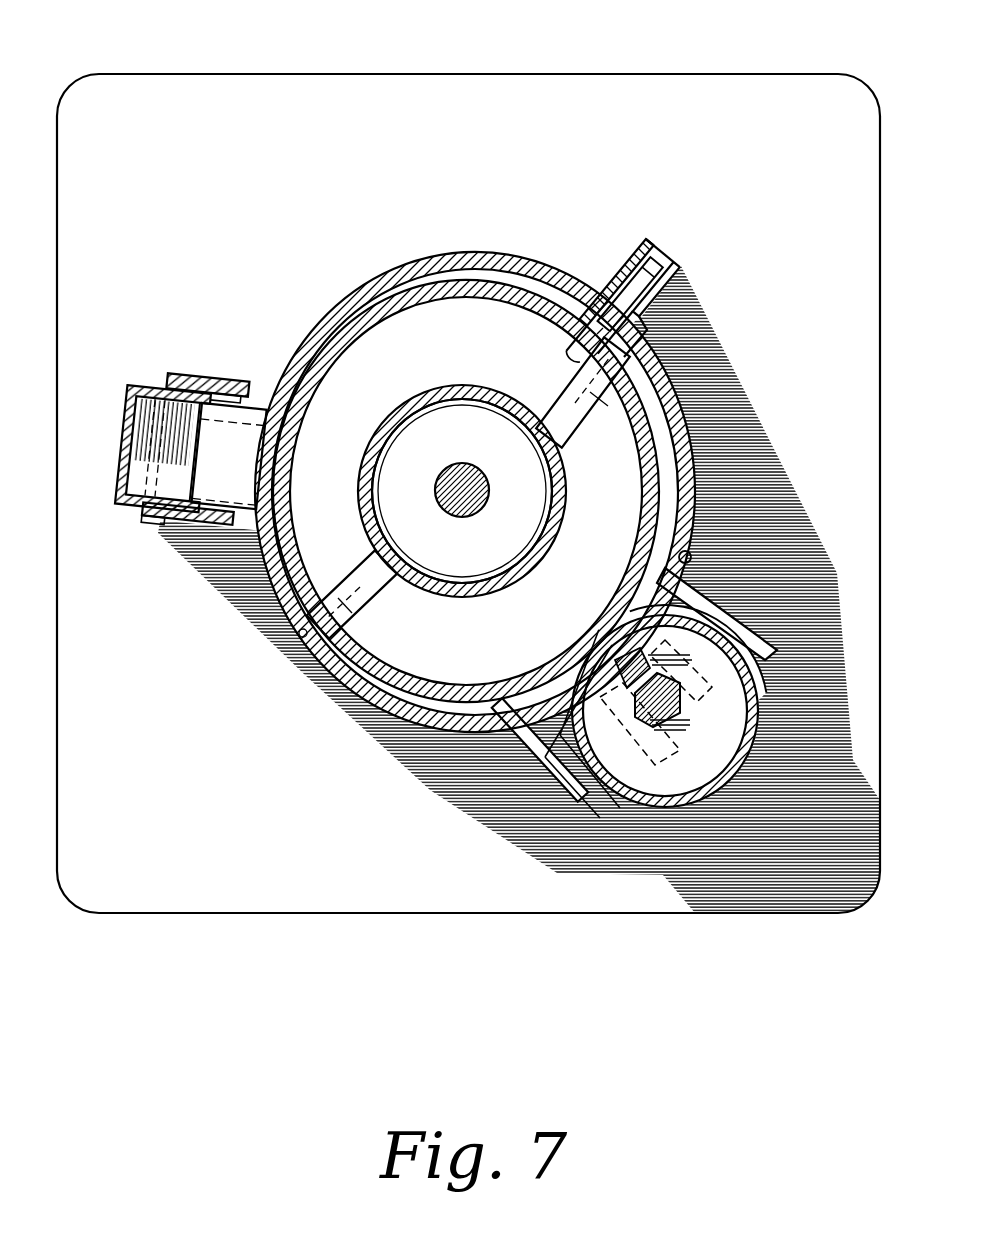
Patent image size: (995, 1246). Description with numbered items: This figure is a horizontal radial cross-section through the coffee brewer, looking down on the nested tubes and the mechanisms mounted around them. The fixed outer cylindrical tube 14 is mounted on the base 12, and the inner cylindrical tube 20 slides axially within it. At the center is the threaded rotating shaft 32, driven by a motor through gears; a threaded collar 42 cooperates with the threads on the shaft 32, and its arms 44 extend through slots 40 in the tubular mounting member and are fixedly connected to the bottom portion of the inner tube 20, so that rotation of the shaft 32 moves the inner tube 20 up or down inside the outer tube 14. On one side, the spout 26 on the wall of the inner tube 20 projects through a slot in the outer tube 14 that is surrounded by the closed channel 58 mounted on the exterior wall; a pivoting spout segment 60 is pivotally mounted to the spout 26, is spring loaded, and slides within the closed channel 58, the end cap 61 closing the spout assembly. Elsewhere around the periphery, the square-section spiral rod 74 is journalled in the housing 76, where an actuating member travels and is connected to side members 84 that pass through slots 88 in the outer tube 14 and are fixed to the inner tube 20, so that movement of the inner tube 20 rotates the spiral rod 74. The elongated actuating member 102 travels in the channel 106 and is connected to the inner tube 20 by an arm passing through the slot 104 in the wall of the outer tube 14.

The base 12 is at (541, 72).
The outer cylindrical tube 14 is at (488, 252).
The inner cylindrical tube 20 is at (373, 298).
The spout 26 is at (240, 443).
The rotating shaft 32 is at (465, 496).
The slots 40 is at (372, 540).
The threaded collar 42 is at (463, 422).
The arms 44 is at (573, 389).
The closed channel 58 is at (182, 522).
The pivoting spout segment 60 is at (148, 378).
The end cap 61 is at (188, 396).
The spiral rod 74 is at (660, 722).
The housing 76 is at (697, 793).
The side members 84 is at (733, 617).
The slots 88 is at (693, 562).
The elongated actuating member 102 is at (668, 262).
The slot 104 is at (598, 305).
The channel 106 is at (652, 236).